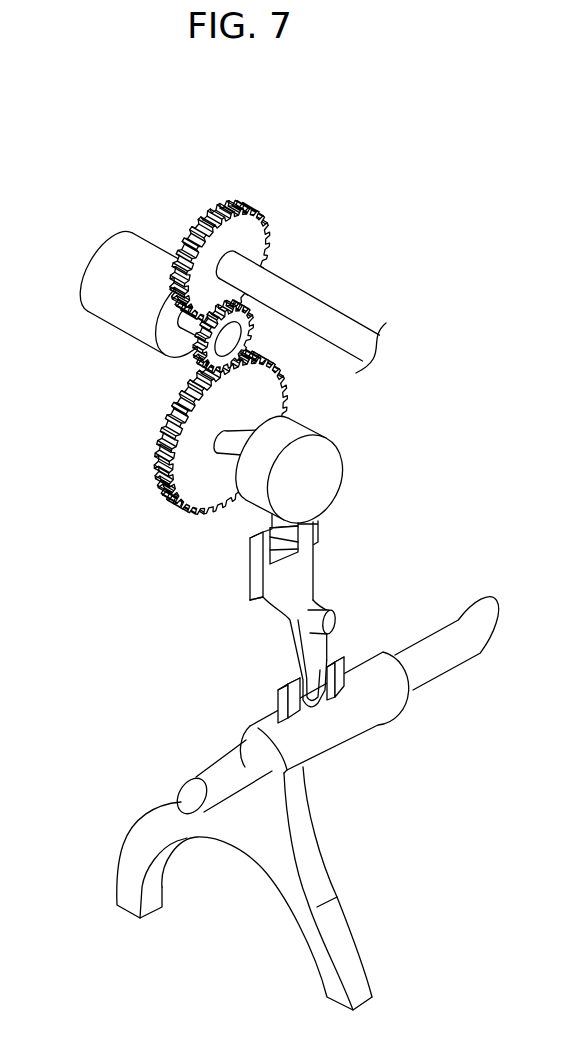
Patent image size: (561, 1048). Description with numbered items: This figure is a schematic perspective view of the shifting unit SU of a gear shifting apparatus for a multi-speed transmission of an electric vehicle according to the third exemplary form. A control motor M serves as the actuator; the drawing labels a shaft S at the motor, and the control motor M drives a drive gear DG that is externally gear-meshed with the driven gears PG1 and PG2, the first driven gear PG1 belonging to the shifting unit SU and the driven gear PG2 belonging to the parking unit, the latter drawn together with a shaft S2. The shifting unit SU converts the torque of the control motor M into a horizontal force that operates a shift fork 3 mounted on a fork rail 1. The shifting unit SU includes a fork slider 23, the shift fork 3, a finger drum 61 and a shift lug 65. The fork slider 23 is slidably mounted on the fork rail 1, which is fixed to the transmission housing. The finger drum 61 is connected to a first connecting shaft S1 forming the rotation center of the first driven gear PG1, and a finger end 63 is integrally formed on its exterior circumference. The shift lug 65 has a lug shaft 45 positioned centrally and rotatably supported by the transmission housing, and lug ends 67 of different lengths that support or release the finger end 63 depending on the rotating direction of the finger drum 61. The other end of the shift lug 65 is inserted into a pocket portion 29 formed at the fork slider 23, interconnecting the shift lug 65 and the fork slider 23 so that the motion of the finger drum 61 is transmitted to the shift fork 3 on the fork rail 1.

The control motor M is at (92, 283).
The motor shaft S is at (177, 327).
The drive gear DG is at (210, 363).
The first driven gear PG1 is at (187, 458).
The driven gear PG2 is at (247, 230).
The first connecting shaft S1 is at (222, 431).
The second shaft S2 is at (293, 290).
The finger drum 61 is at (337, 460).
The finger end 63 is at (313, 547).
The shift lug 65 is at (300, 652).
The lug ends 67 is at (263, 555).
The lug shaft 45 is at (333, 623).
The pocket portion 29 is at (292, 700).
The fork rail 1 is at (334, 708).
The fork slider 23 is at (370, 717).
The shift fork 3 is at (350, 947).
The shifting unit SU is at (280, 803).